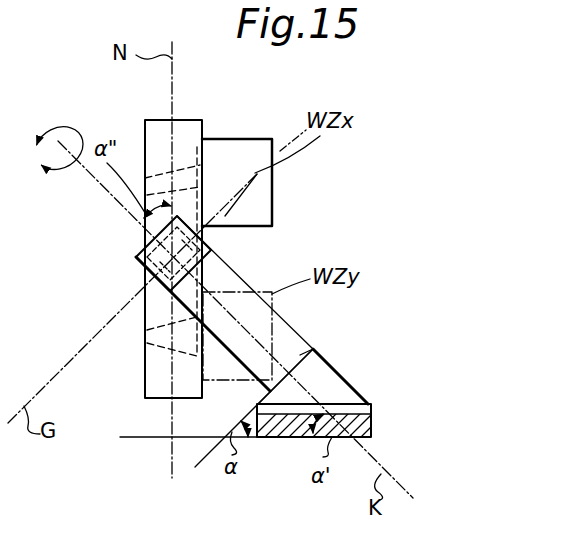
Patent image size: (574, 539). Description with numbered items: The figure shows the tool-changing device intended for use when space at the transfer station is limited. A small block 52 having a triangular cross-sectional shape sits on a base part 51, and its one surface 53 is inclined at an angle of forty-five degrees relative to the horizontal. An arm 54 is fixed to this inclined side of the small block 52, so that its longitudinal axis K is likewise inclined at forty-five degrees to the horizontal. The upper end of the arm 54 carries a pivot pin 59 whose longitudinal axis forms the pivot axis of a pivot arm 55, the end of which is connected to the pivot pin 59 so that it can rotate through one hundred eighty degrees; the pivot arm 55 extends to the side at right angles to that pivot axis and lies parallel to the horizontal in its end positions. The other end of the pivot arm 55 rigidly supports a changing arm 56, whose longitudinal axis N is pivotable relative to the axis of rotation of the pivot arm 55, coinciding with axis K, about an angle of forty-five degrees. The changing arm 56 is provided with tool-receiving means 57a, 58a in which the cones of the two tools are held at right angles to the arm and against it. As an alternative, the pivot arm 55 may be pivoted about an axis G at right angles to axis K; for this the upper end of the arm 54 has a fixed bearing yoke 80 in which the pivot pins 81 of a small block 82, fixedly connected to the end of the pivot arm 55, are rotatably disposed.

The base part 51 is at (357, 428).
The small block 52 is at (322, 377).
The surface 53 is at (305, 345).
The arm 54 is at (223, 285).
The pivot arm 55 is at (147, 249).
The changing arm 56 is at (182, 137).
The tool-receiving means 57a is at (165, 182).
The tool-receiving means 58a is at (166, 338).
The pivot pin 59 is at (160, 279).
The bearing yoke 80 is at (208, 248).
The pivot pins 81 is at (195, 226).
The small block 82 is at (143, 233).